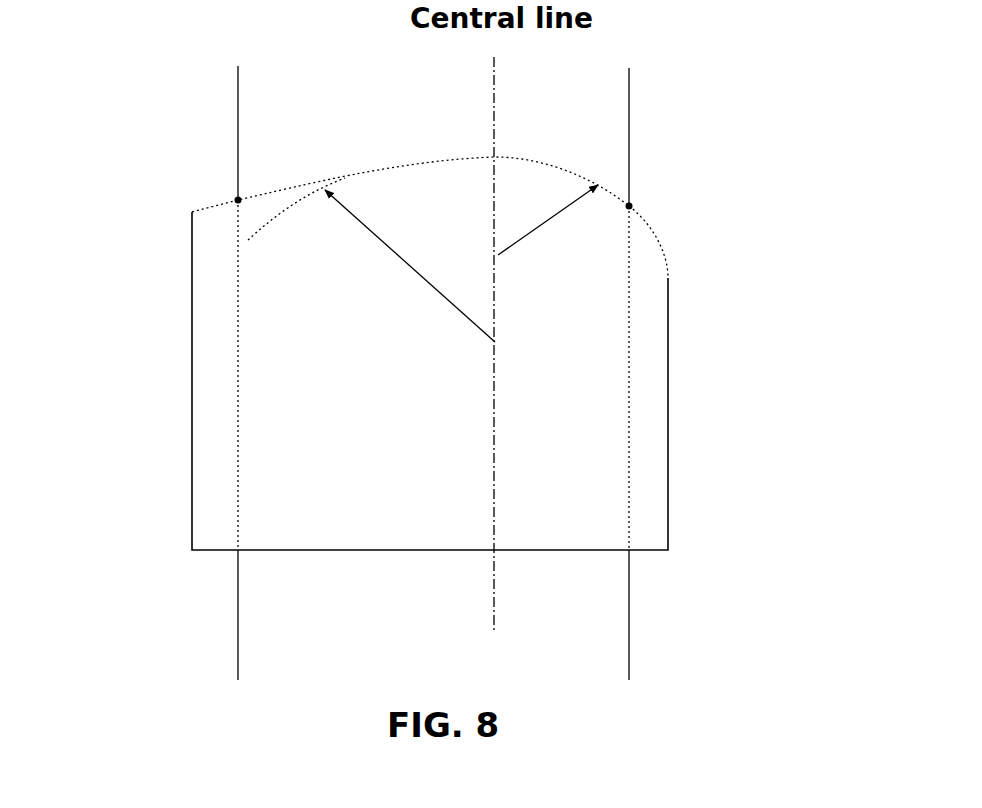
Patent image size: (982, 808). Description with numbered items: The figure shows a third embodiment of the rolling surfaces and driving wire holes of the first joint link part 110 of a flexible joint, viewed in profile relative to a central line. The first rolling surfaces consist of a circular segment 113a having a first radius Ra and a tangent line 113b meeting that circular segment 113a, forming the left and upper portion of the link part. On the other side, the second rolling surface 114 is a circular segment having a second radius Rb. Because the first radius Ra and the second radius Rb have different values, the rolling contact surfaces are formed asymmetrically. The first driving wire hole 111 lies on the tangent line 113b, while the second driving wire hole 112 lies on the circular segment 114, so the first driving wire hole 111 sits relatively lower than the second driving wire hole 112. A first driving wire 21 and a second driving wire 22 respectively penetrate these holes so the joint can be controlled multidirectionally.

The first joint link part 110 is at (668, 386).
The first driving wire hole 111 is at (237, 198).
The second driving wire hole 112 is at (631, 205).
The circular segment of first rolling surface 113a is at (463, 160).
The tangent line of first rolling surface 113b is at (327, 182).
The second rolling surface 114 is at (548, 162).
The first driving wire 21 is at (238, 398).
The second driving wire 22 is at (629, 478).